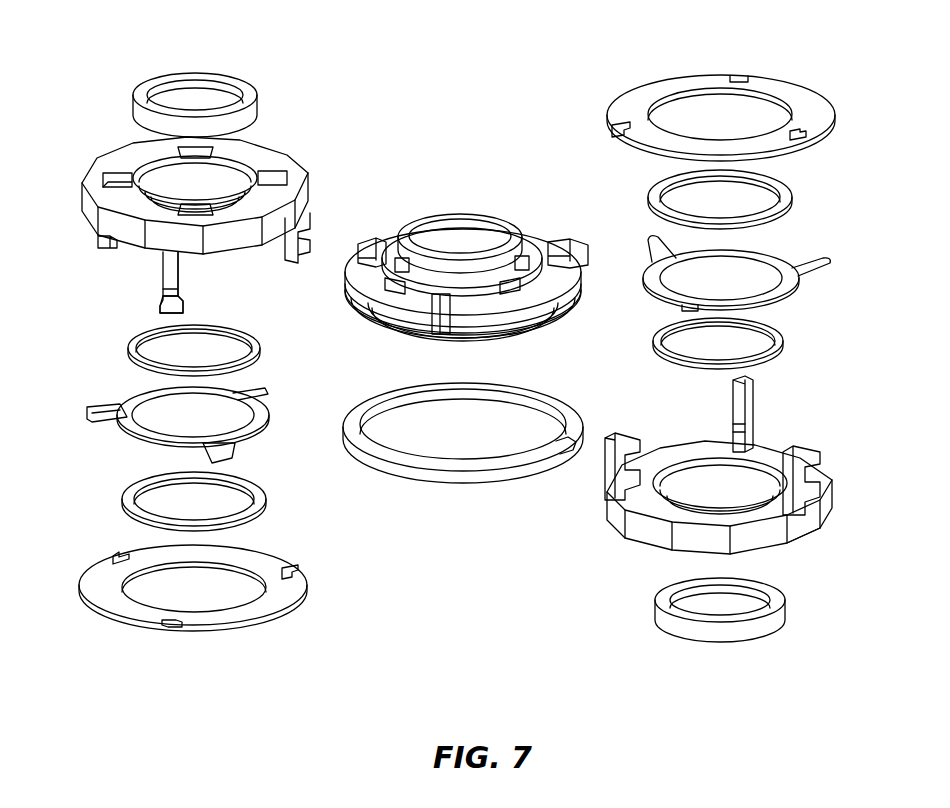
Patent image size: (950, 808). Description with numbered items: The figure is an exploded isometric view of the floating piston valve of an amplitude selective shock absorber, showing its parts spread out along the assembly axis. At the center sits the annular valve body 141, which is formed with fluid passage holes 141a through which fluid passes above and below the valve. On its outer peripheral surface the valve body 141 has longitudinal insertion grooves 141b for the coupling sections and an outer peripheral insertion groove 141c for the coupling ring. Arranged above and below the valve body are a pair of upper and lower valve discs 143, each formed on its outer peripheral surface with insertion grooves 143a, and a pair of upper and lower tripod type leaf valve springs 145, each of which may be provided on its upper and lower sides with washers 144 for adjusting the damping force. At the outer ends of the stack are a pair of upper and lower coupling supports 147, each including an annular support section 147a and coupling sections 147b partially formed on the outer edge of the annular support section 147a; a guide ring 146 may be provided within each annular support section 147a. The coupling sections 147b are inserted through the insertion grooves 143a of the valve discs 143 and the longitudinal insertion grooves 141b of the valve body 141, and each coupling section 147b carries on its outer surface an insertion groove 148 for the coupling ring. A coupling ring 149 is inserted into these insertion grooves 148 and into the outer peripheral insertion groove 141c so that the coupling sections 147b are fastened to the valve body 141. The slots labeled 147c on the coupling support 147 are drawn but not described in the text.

The annular valve body 141 is at (472, 272).
The fluid passage hole 141a is at (510, 290).
The longitudinal insertion groove 141b is at (440, 334).
The outer peripheral insertion groove 141c is at (515, 318).
The valve disc 143 is at (287, 598).
The insertion groove 143a is at (170, 627).
The washer 144 is at (259, 351).
The tripod type leaf valve spring 145 is at (128, 426).
The guide ring 146 is at (255, 106).
The coupling support 147 is at (312, 163).
The annular support section 147a is at (87, 212).
The coupling section 147b is at (165, 268).
The housing slot 147c is at (122, 178).
The insertion groove for the coupling ring 148 is at (182, 297).
The coupling ring 149 is at (570, 410).